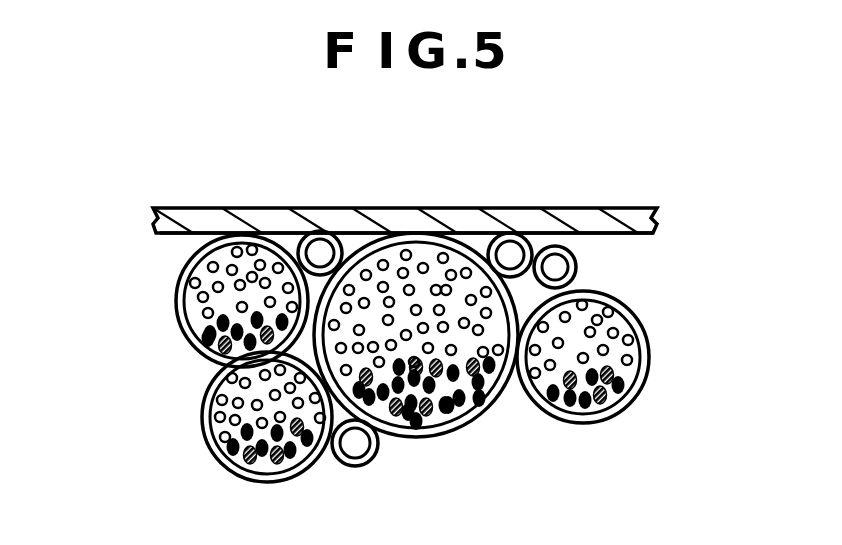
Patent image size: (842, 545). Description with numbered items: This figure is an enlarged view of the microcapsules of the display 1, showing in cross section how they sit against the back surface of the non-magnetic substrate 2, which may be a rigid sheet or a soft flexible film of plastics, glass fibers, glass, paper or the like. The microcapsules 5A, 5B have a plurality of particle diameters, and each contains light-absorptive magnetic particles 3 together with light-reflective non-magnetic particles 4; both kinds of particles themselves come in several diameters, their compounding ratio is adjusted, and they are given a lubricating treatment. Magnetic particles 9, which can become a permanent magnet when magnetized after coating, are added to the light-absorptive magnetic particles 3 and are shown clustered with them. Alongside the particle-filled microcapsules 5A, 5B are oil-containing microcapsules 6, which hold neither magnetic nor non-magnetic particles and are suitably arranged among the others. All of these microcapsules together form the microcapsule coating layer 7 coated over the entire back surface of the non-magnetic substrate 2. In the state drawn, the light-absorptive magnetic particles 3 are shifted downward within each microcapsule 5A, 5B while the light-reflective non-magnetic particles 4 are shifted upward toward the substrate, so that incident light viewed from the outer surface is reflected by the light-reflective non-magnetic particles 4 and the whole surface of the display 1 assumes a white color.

The display 1 is at (598, 208).
The non-magnetic substrate 2 is at (490, 222).
The light-absorptive magnetic particles 3 is at (205, 339).
The light-reflective non-magnetic particles 4 is at (420, 263).
The microcapsule 5A is at (503, 393).
The microcapsule 5B is at (177, 283).
The oil-containing microcapsule 6 is at (320, 255).
The microcapsule coating layer 7 is at (612, 268).
The magnetic particles 9 is at (215, 362).